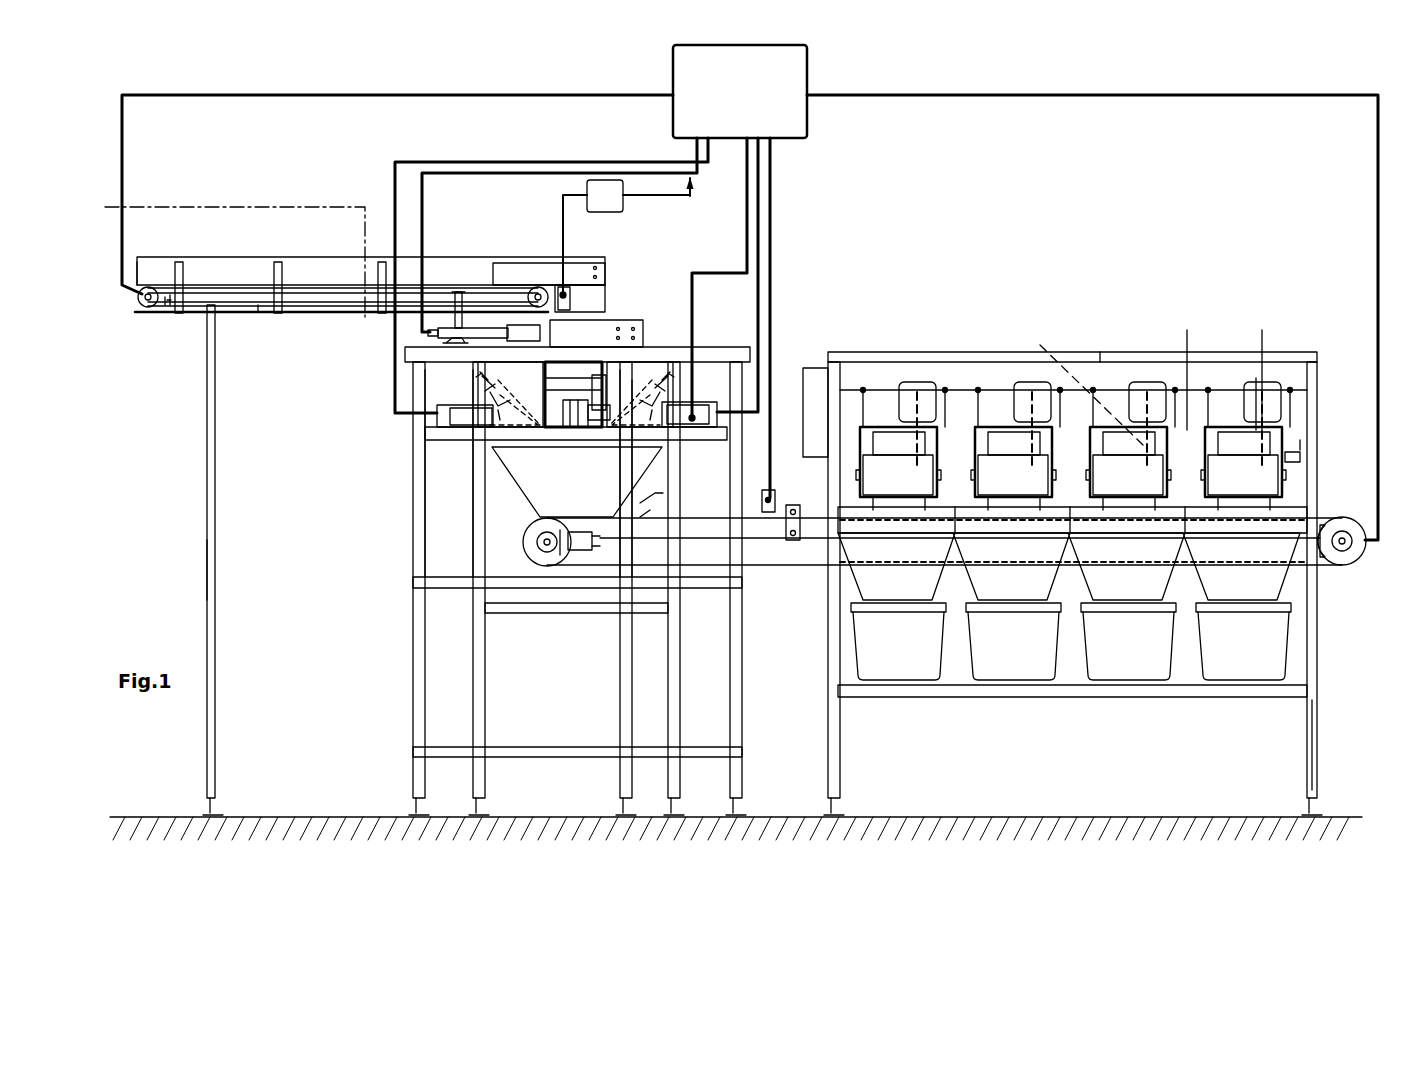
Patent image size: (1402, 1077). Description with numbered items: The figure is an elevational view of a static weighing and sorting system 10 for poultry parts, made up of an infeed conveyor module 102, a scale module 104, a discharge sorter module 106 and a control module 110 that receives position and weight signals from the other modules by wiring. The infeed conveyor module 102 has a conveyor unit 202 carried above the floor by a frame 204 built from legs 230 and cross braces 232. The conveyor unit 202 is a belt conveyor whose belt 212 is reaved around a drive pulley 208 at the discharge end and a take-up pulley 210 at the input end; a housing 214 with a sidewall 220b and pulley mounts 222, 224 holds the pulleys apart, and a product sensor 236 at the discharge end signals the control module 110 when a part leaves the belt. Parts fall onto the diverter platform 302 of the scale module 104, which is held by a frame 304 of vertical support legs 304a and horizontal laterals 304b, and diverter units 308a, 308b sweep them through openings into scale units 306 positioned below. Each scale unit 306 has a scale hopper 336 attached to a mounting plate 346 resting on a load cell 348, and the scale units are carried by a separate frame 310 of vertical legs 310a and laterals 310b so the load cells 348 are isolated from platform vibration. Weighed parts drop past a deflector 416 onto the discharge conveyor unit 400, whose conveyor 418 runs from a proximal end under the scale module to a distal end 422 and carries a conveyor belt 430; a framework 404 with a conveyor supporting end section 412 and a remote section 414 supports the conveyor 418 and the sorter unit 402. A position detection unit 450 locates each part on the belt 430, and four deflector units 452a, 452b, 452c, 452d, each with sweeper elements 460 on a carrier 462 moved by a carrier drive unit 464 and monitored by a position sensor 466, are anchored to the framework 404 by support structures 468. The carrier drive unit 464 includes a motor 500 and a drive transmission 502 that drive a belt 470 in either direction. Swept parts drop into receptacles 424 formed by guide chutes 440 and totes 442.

The food processing system 10 is at (1050, 82).
The infeed conveyor module 102 is at (248, 250).
The scale module 104 is at (622, 277).
The discharge sorter module 106 is at (1036, 280).
The control module 110 is at (812, 62).
The conveyor unit 202 is at (138, 302).
The frame 204 is at (206, 460).
The drive pulley 208 is at (148, 309).
The take-up pulley 210 is at (538, 285).
The belt 212 is at (240, 283).
The housing 214 is at (440, 270).
The sidewall 220b is at (155, 270).
The pulley mount 222 is at (172, 308).
The pulley mount 224 is at (503, 290).
The leg 230 is at (218, 540).
The cross brace 232 is at (258, 315).
The product sensor 236 is at (618, 212).
The diverter platform 302 is at (729, 306).
The frame 304 is at (412, 620).
The vertical support leg 304a is at (415, 720).
The horizontal lateral 304b is at (448, 578).
The scale unit 306 is at (453, 442).
The diverter unit 308a is at (543, 340).
The diverter unit 308b is at (627, 318).
The frame 310 is at (488, 640).
The vertical leg 310a is at (480, 705).
The lateral 310b is at (553, 614).
The scale hopper 336 is at (484, 418).
The mounting plate 346 is at (380, 462).
The load cell 348 is at (708, 432).
The discharge conveyor unit 400 is at (800, 567).
The sorter unit 402 is at (1302, 432).
The framework 404 is at (1323, 685).
The conveyor supporting end section 412 is at (635, 675).
The remote section 414 is at (1314, 747).
The poultry part deflector 416 is at (553, 480).
The conveyor 418 is at (1322, 550).
The distal end 422 is at (1360, 520).
The receptacle 424 is at (1012, 698).
The conveyor belt 430 is at (1322, 517).
The guide chute 440 is at (1069, 566).
The tote 442 is at (1071, 641).
The poultry part position detection unit 450 is at (776, 503).
The deflector unit 452a is at (1230, 420).
The deflector unit 452b is at (1115, 420).
The deflector unit 452c is at (997, 420).
The deflector unit 452d is at (882, 420).
The sweeper element 460 is at (1256, 378).
The sweeper element carrier 462 is at (1187, 330).
The carrier drive unit 464 is at (1262, 330).
The sweeper element position sensor 466 is at (1302, 455).
The support structure 468 is at (947, 430).
The conveyor belt 470 is at (1071, 468).
The motor 500 is at (1153, 380).
The drive transmission 502 is at (1083, 382).